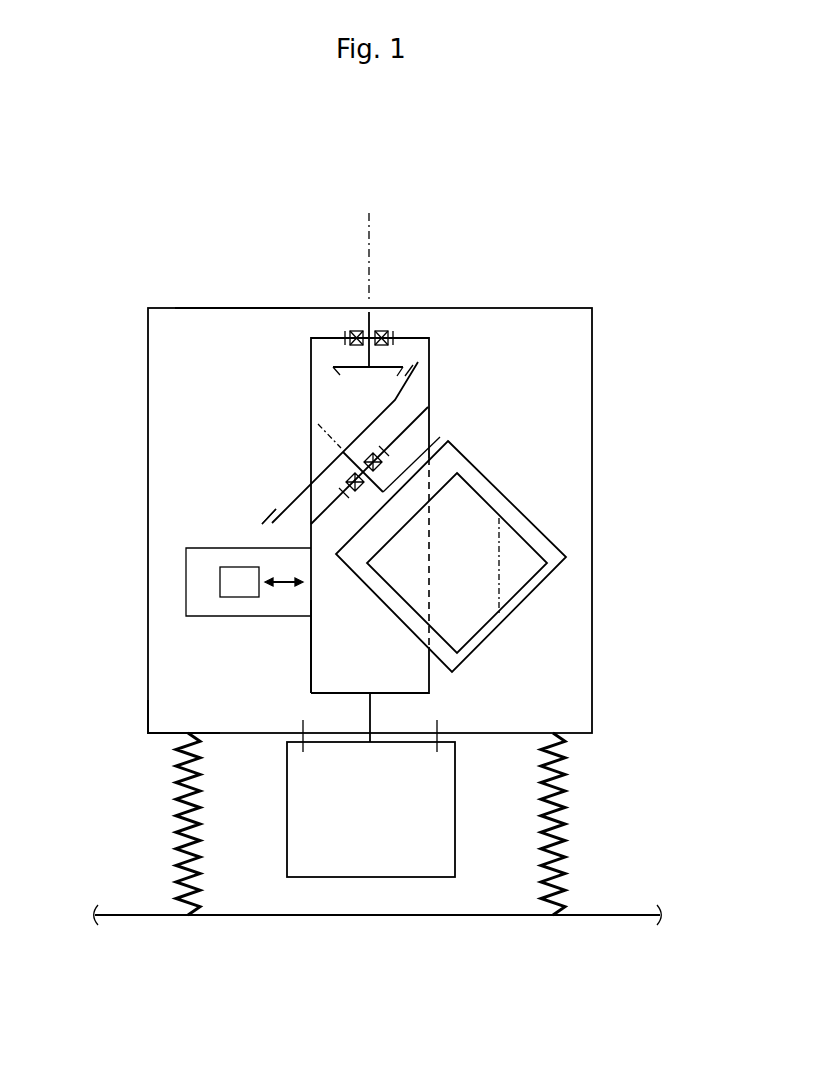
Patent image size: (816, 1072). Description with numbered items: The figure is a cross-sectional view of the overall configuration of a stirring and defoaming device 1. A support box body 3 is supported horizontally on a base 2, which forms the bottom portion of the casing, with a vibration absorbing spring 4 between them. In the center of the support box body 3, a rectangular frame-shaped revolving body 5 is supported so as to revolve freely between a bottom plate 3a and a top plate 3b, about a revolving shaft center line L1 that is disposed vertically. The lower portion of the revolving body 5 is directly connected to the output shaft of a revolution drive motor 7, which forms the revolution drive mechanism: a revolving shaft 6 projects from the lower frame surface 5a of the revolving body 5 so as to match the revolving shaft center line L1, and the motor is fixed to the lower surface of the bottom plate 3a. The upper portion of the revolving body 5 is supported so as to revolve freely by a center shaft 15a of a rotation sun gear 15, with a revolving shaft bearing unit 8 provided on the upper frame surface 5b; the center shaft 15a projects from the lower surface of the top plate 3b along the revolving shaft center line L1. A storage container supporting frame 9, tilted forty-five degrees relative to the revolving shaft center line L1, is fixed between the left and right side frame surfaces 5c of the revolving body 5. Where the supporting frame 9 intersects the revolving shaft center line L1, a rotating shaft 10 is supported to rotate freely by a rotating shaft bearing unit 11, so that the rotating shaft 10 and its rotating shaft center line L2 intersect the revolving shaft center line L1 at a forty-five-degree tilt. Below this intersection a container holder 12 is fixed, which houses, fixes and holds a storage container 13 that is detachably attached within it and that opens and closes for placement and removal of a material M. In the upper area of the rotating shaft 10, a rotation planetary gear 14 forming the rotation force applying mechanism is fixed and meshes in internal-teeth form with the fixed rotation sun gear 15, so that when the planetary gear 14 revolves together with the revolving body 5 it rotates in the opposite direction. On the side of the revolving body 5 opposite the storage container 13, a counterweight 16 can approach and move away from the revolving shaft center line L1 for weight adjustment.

The stirring and defoaming device 1 is at (663, 280).
The base 2 is at (115, 912).
The support box body 3 is at (148, 424).
The bottom plate 3a is at (162, 735).
The top plate 3b is at (200, 308).
The vibration absorbing spring 4 is at (176, 815).
The revolving body 5 is at (306, 416).
The lower frame surface 5a is at (432, 694).
The upper frame surface 5b is at (416, 336).
The side frame surfaces 5c is at (322, 646).
The revolving shaft 6 is at (370, 712).
The revolution drive motor 7 is at (300, 815).
The revolving shaft bearing unit 8 is at (353, 330).
The storage container supporting frame 9 is at (410, 417).
The rotating shaft 10 is at (390, 459).
The rotating shaft bearing unit 11 is at (350, 478).
The container holder 12 is at (488, 480).
The storage container 13 is at (515, 573).
The rotation planetary gear 14 is at (262, 522).
The rotation sun gear 15 is at (335, 374).
The center shaft 15a is at (371, 323).
The counterweight 16 is at (240, 588).
The material M is at (507, 541).
The revolving shaft center line L1 is at (372, 218).
The rotating shaft center line L2 is at (341, 432).